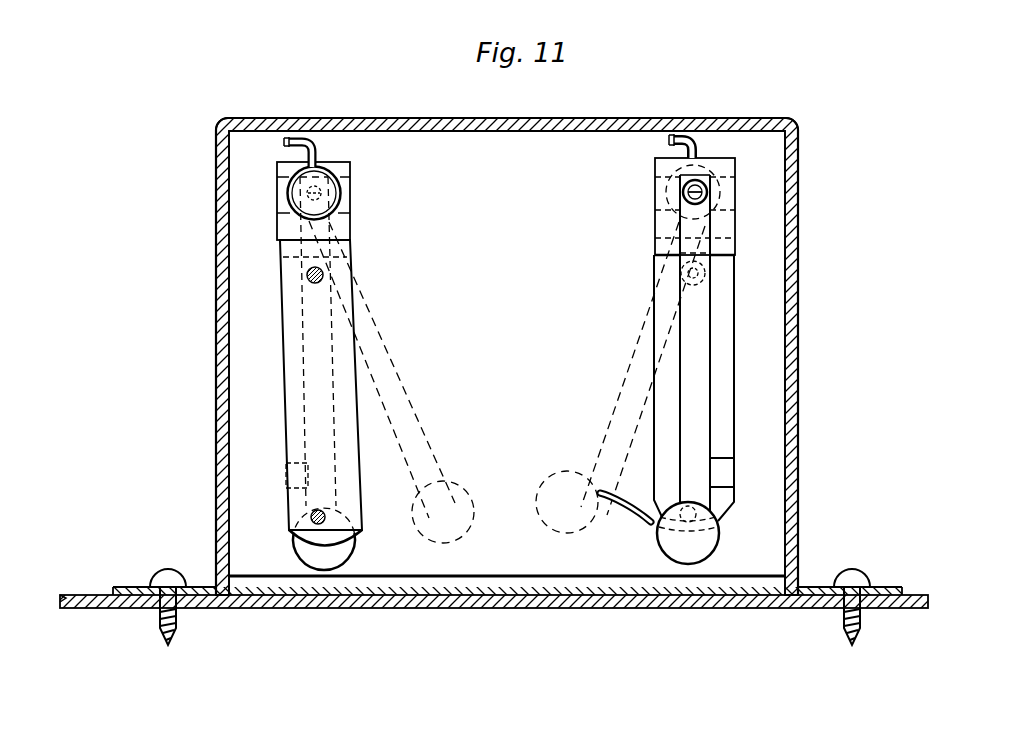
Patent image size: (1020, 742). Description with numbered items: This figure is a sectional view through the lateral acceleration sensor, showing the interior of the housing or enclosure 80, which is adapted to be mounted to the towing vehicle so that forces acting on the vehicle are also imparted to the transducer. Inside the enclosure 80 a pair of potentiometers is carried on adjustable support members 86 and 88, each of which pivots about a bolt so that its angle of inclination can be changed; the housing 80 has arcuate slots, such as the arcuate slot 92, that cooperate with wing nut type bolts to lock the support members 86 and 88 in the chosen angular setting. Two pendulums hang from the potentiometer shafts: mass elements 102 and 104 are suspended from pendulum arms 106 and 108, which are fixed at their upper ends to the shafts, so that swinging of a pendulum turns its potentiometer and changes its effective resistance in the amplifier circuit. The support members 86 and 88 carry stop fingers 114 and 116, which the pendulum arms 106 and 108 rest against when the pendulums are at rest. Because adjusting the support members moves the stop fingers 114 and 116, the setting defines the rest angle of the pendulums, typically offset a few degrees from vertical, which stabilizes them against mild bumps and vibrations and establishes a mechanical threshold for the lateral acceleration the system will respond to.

The housing or enclosure 80 is at (713, 122).
The adjustable support member 86 is at (296, 348).
The adjustable support member 88 is at (720, 361).
The arcuate slot 92 is at (627, 508).
The mass element 102 is at (333, 551).
The mass element 104 is at (710, 545).
The pendulum arm 106 is at (321, 418).
The pendulum arm 108 is at (693, 410).
The stop finger 114 is at (296, 472).
The stop finger 116 is at (715, 467).